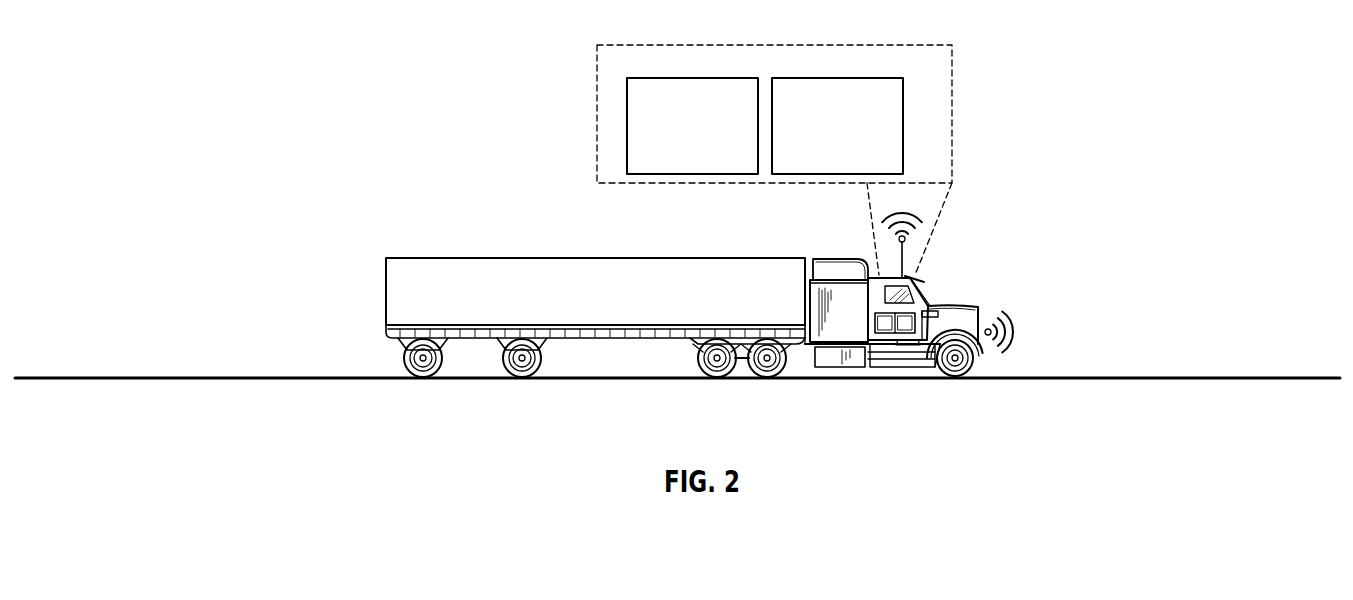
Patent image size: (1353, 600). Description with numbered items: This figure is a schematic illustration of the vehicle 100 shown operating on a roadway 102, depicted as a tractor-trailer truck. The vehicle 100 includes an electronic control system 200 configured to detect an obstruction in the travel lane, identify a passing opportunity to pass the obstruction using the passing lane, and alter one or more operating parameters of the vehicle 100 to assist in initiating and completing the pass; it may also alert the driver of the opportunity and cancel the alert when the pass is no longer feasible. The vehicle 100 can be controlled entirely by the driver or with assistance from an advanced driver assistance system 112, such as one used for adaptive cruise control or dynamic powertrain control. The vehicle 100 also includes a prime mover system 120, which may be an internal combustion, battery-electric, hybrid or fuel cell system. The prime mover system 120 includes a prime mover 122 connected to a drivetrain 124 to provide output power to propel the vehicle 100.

The vehicle 100 is at (599, 344).
The roadway 102 is at (132, 376).
The advanced driver assistance system 112 is at (675, 137).
The electronic control system 200 is at (820, 137).
The prime mover system 120 is at (893, 345).
The prime mover 122 is at (868, 349).
The drivetrain 124 is at (907, 343).